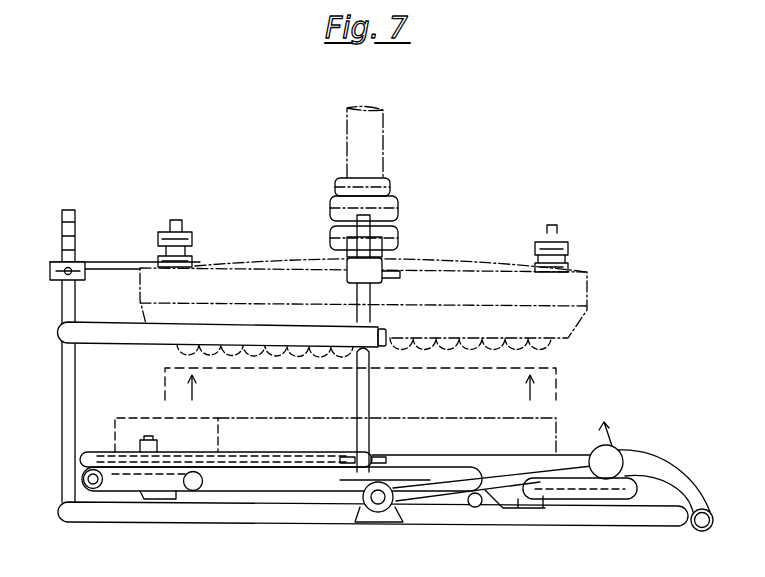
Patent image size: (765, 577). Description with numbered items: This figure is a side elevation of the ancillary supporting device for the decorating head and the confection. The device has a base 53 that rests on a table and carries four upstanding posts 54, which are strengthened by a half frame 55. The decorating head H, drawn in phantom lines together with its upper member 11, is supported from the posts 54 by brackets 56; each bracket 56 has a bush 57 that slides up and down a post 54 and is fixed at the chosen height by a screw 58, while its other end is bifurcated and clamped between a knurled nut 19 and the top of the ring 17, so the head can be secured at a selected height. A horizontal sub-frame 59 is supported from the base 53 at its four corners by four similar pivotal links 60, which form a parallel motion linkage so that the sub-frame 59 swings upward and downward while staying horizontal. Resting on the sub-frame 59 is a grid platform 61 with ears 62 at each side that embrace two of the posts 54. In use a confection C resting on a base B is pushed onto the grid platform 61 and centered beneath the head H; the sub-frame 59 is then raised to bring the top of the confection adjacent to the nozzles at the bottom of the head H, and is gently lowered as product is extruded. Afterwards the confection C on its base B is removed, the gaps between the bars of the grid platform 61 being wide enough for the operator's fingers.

The spindle tube 11 is at (388, 187).
The ring 17 is at (150, 296).
The knurled nut 19 is at (190, 236).
The base 53 is at (262, 513).
The upstanding post 54 is at (62, 443).
The half frame 55 is at (127, 344).
The bracket 56 is at (118, 262).
The bush 57 is at (57, 262).
The screw 58 is at (72, 270).
The horizontal sub-frame 59 is at (220, 480).
The pivotal link 60 is at (153, 483).
The grid platform 61 is at (430, 463).
The ear 62 is at (350, 456).
The decorating head H is at (448, 263).
The confection C is at (560, 388).
The base B is at (555, 438).